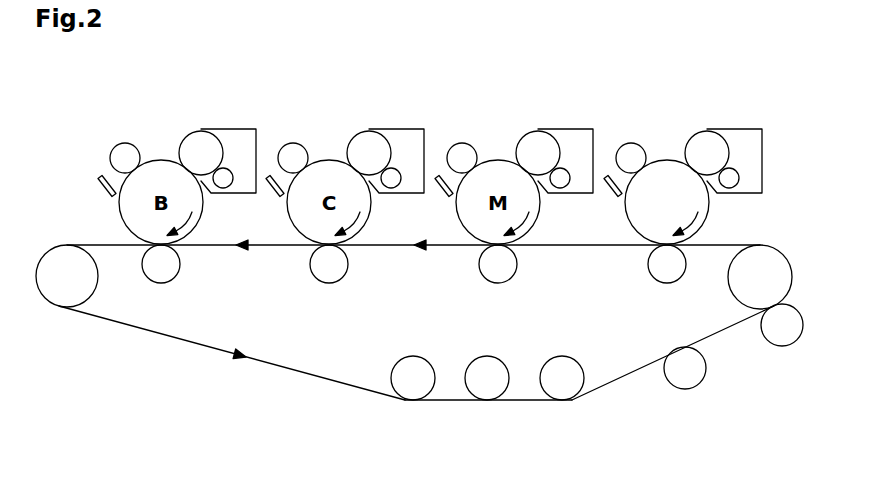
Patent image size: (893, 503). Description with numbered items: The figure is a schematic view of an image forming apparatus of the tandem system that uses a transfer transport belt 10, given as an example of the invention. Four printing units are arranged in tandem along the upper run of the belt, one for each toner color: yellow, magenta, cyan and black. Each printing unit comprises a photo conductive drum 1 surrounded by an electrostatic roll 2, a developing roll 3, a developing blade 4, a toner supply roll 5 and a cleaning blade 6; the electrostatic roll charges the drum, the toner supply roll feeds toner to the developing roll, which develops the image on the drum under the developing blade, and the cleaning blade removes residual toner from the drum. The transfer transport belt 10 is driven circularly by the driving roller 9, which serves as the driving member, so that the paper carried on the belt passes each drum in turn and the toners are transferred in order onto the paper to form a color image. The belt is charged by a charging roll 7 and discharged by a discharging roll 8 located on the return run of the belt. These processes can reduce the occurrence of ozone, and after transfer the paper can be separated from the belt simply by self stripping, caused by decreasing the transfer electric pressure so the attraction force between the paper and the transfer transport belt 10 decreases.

The photo conductive drum 1 is at (694, 202).
The electrostatic roll 2 is at (634, 125).
The developing roll 3 is at (705, 125).
The developing blade 4 is at (735, 135).
The toner supply roll 5 is at (758, 167).
The cleaning blade 6 is at (606, 248).
The charging roll 7 is at (782, 359).
The discharging roll 8 is at (685, 403).
The driving roller 9 is at (67, 331).
The transfer transport belt 10 is at (416, 320).